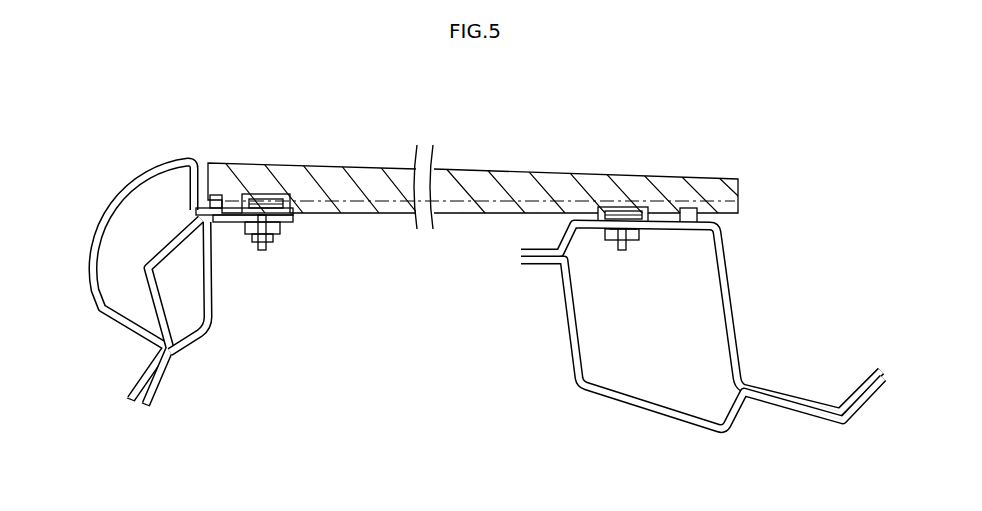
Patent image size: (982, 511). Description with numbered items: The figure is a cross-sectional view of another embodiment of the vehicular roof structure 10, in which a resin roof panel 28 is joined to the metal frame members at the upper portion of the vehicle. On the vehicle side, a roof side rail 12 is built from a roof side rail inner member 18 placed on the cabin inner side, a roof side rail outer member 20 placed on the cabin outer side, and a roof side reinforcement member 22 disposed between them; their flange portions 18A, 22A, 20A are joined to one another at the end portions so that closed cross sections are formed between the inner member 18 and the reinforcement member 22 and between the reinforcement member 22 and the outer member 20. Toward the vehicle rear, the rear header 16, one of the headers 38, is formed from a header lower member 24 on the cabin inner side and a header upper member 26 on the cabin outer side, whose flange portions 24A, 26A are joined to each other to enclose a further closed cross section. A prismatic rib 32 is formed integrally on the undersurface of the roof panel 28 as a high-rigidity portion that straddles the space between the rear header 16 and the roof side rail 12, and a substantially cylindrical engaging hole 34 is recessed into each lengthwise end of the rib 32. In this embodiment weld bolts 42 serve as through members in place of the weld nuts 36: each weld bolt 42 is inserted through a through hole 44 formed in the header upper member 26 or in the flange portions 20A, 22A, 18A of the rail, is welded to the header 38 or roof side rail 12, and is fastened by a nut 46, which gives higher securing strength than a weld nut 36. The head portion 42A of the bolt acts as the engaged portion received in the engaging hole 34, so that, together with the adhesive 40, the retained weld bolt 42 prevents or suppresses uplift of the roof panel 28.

The vehicular roof structure 10 is at (720, 98).
The roof side rail 12 is at (84, 156).
The rear header 16 is at (756, 270).
The roof side rail inner member 18 is at (211, 317).
The flange portion 18A is at (170, 373).
The roof side rail outer member 20 is at (105, 214).
The flange portion 20A is at (131, 392).
The roof side reinforcement member 22 is at (150, 288).
The flange portion 22A is at (157, 393).
The header lower member 24 is at (570, 340).
The flange portion 24A is at (540, 266).
The header upper member 26 is at (728, 310).
The flange portion 26A is at (533, 258).
The roof panel 28 is at (473, 158).
The rib 32 is at (463, 210).
The engaging hole 34 is at (265, 194).
The weld nut 36 is at (641, 212).
The header 38 is at (661, 344).
The adhesive 40 is at (191, 197).
The weld bolt 42 is at (444, 146).
The head portion 42A is at (258, 194).
The through hole 44 is at (262, 250).
The nut 46 is at (285, 239).